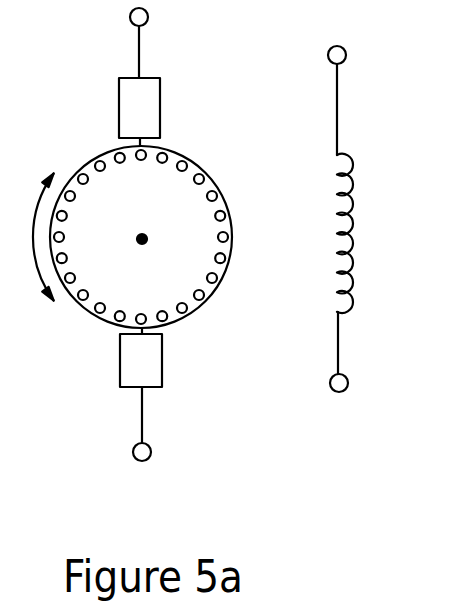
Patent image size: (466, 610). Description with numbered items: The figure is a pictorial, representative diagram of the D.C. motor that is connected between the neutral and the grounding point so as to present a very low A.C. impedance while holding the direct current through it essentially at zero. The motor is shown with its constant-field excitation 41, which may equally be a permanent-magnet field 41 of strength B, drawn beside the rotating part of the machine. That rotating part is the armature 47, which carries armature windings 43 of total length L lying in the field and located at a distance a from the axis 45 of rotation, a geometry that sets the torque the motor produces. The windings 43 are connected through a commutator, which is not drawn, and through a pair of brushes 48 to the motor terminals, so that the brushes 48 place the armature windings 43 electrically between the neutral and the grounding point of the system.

The constant-field excitation 41 is at (350, 228).
The armature windings 43 is at (74, 181).
The axis of rotation 45 is at (142, 239).
The armature 47 is at (100, 293).
The brushes 48 is at (160, 107).